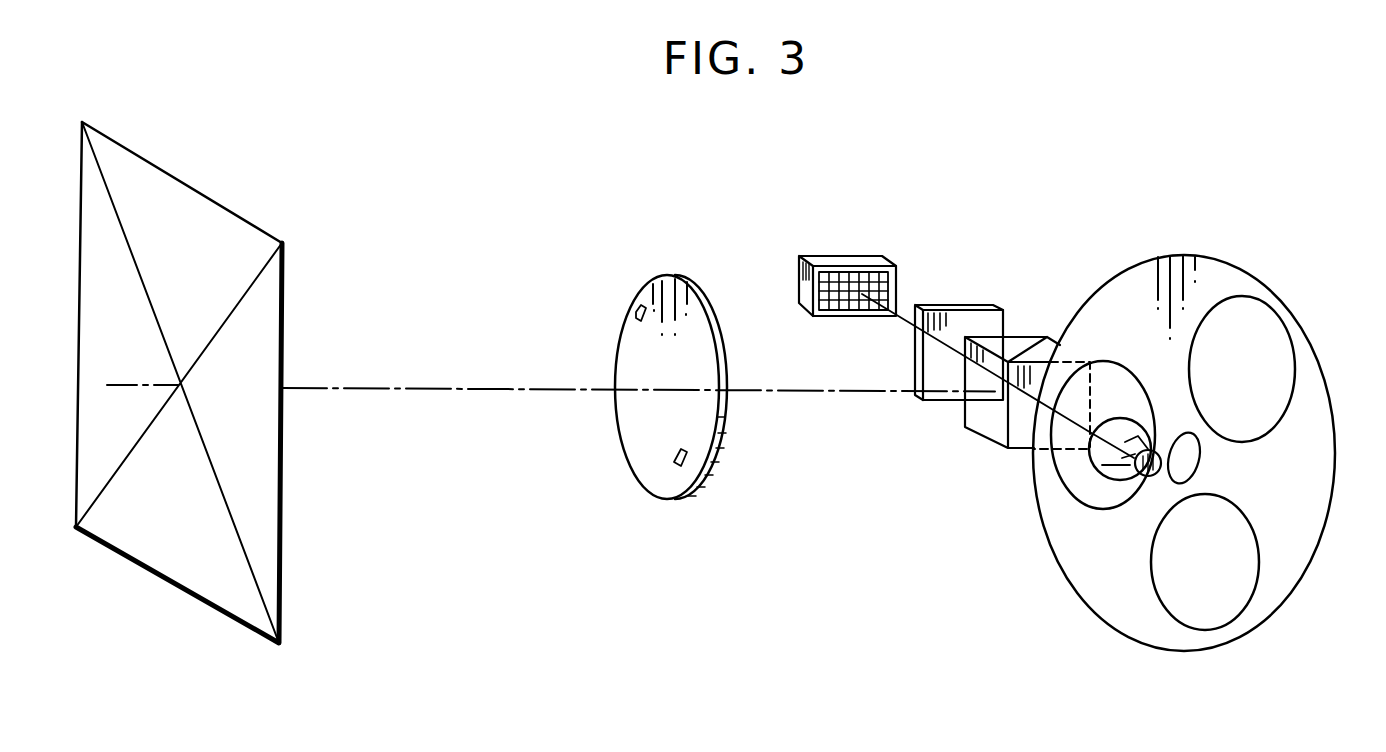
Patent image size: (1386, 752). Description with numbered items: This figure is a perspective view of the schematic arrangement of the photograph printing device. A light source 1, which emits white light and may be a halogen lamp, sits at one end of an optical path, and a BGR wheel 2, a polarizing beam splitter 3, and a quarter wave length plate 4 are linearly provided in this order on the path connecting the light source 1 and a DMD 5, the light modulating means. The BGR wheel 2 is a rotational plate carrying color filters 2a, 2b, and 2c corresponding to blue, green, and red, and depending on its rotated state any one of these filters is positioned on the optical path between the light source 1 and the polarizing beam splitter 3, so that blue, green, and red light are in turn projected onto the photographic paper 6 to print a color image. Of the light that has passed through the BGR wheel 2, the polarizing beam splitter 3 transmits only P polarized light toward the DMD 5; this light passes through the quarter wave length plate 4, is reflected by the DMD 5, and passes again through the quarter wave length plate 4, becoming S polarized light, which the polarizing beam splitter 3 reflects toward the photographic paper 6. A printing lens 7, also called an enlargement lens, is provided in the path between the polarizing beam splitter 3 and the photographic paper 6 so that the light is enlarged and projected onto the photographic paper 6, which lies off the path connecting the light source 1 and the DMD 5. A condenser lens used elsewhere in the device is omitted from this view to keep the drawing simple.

The light source 1 is at (1128, 468).
The BGR wheel 2 is at (1313, 455).
The color filter 2a is at (1280, 349).
The color filter 2b is at (1225, 596).
The color filter 2c is at (1072, 472).
The polarizing beam splitter 3 is at (1023, 337).
The quarter wave length plate 4 is at (967, 323).
The DMD 5 is at (857, 253).
The photographic paper 6 is at (185, 181).
The printing lens 7 is at (650, 283).